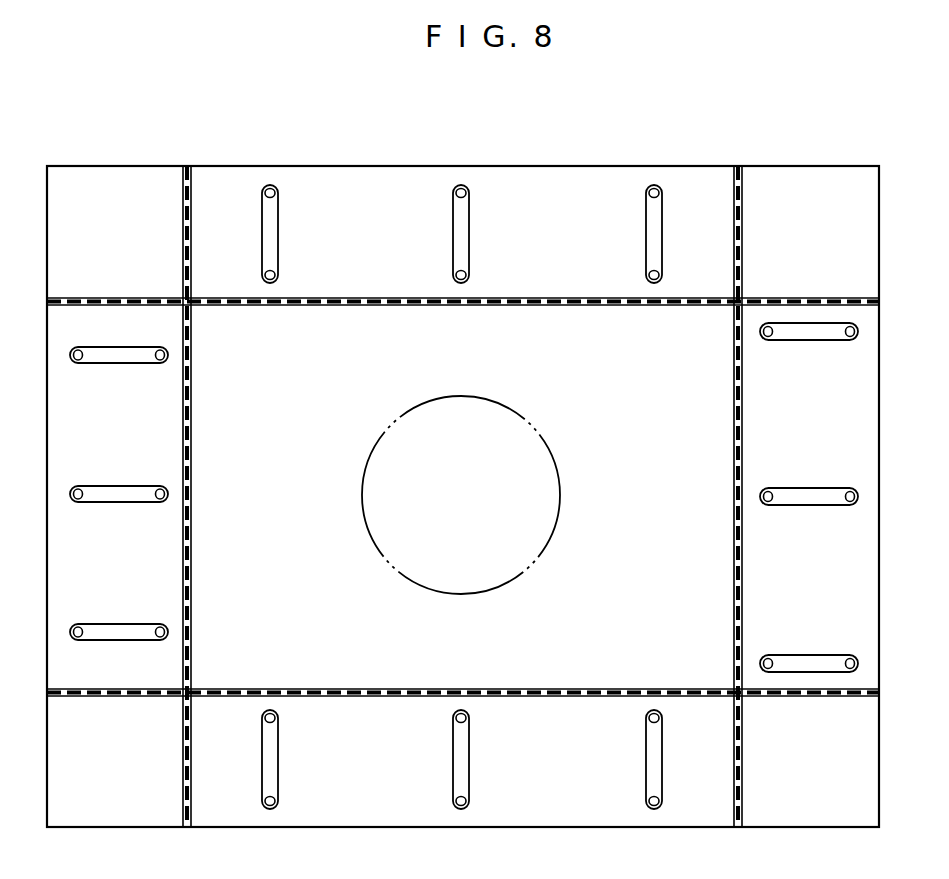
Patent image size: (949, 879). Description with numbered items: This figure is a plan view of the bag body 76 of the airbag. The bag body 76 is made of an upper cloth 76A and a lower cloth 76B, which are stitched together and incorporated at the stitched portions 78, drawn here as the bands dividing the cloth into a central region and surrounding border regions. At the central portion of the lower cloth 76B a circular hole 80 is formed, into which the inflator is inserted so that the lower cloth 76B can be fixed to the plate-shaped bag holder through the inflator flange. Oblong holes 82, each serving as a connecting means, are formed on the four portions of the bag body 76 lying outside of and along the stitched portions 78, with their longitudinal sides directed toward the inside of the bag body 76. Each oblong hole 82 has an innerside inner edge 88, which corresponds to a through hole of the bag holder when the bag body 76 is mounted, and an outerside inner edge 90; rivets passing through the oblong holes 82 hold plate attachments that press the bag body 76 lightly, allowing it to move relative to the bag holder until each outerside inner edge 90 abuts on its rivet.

The bag body 76 is at (566, 150).
The upper cloth 76A is at (545, 222).
The lower cloth 76B is at (592, 205).
The stitched portions 78 is at (425, 306).
The circular hole 80 is at (422, 586).
The oblong holes 82 is at (262, 237).
The innerside inner edges 88 is at (278, 280).
The outerside inner edges 90 is at (271, 190).